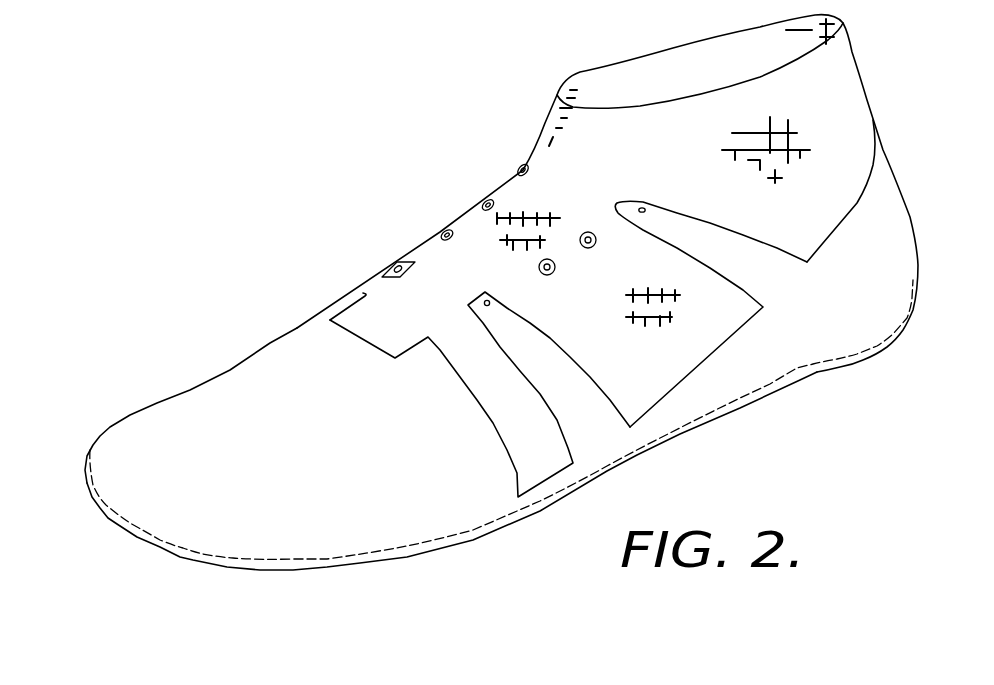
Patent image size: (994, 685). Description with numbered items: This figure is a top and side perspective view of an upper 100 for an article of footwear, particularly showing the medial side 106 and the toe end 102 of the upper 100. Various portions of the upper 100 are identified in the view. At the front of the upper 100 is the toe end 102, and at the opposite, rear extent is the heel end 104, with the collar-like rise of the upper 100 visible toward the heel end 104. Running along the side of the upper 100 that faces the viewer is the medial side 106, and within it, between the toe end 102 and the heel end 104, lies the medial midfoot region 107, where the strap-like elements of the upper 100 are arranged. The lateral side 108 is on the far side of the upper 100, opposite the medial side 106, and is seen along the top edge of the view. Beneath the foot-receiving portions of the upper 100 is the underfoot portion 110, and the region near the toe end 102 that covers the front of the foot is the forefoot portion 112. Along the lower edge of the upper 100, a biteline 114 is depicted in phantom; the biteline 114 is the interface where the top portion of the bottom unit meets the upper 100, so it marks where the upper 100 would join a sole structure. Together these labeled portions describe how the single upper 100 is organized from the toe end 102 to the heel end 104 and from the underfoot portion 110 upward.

The upper 100 is at (393, 217).
The toe end 102 is at (150, 477).
The heel end 104 is at (865, 100).
The medial side 106 is at (633, 357).
The medial midfoot region 107 is at (600, 292).
The lateral side 108 is at (457, 213).
The underfoot portion 110 is at (617, 470).
The forefoot portion 112 is at (490, 273).
The biteline 114 is at (195, 547).